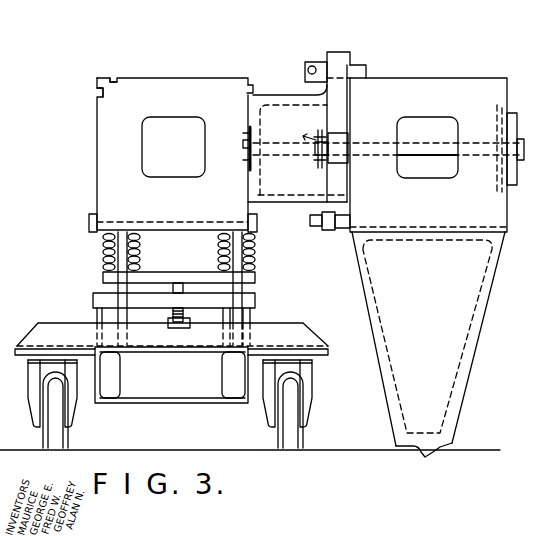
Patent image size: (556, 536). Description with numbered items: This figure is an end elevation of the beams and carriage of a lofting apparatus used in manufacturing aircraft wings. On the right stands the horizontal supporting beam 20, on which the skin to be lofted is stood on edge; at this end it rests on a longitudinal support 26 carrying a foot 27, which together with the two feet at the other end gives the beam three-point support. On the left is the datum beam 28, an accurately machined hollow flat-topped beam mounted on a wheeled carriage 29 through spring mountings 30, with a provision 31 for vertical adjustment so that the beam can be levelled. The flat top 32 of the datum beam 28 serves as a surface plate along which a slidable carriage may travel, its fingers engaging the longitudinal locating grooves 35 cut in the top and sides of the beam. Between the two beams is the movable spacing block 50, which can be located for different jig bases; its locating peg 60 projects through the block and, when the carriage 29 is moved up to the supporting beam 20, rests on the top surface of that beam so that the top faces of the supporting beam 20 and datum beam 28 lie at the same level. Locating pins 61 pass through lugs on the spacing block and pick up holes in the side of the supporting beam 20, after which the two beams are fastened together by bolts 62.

The supporting beam 20 is at (473, 90).
The longitudinal support 26 is at (443, 342).
The foot 27 is at (437, 437).
The datum beam 28 is at (112, 137).
The wheeled carriage 29 is at (58, 337).
The spring mountings 30 is at (107, 246).
The provision for vertical adjustment 31 is at (178, 285).
The flat top 32 is at (140, 78).
The longitudinal locating grooves 35 is at (113, 78).
The movable spacing block 50 is at (275, 117).
The locating peg 60 is at (360, 63).
The locating pins 61 is at (323, 143).
The bolts 62 is at (413, 147).